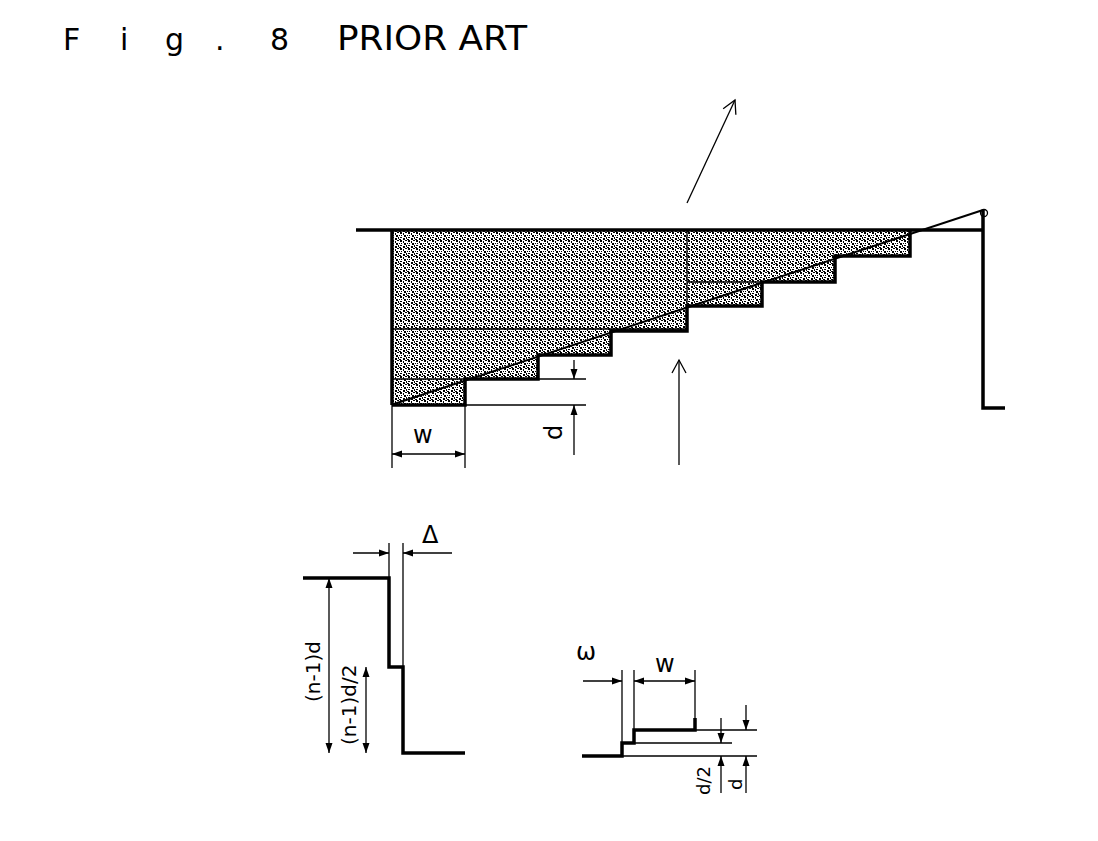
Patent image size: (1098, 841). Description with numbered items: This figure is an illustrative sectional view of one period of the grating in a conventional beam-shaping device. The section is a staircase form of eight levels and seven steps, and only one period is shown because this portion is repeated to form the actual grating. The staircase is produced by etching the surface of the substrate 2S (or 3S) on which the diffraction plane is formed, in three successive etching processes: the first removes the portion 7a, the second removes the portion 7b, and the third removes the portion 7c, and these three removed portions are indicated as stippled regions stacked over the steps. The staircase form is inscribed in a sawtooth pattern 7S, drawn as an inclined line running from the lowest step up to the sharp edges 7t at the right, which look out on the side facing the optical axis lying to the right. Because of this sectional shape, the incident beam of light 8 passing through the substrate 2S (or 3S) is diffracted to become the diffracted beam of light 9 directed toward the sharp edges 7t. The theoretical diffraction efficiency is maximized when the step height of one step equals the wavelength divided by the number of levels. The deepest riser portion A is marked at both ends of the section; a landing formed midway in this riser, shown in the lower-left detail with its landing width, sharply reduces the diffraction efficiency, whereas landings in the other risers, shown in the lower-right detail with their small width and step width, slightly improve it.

The portion removed by first etching process 7a is at (537, 243).
The portion removed by second etching process 7b is at (767, 243).
The portion removed by third etching process 7c is at (882, 242).
The sawtooth pattern 7S is at (947, 222).
The sharp edges 7t is at (988, 213).
The substrate 2S is at (963, 245).
The substrate 3S is at (964, 246).
The diffracted beam of light 9 is at (712, 148).
The beam of light 8 is at (680, 433).
The deepest riser portion A is at (383, 300).